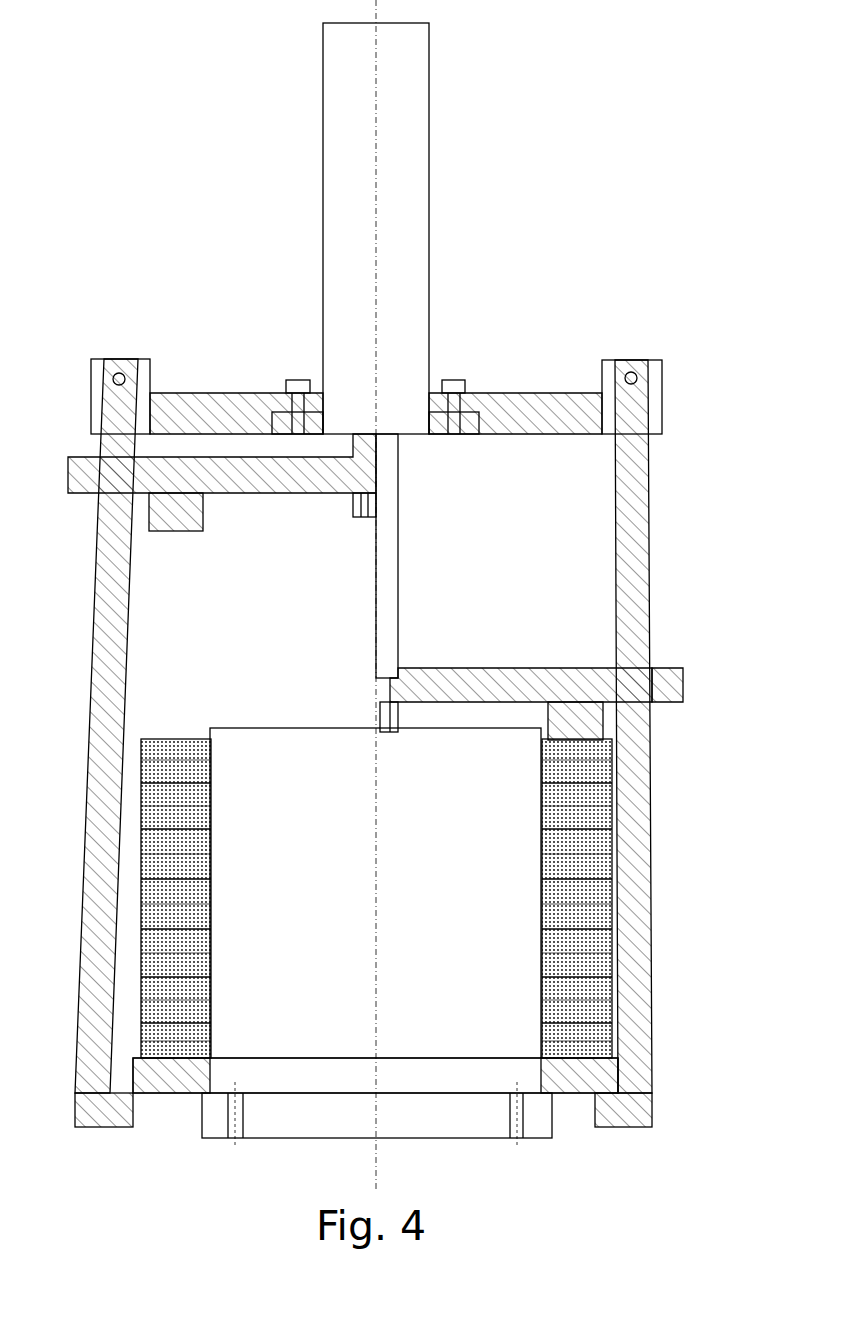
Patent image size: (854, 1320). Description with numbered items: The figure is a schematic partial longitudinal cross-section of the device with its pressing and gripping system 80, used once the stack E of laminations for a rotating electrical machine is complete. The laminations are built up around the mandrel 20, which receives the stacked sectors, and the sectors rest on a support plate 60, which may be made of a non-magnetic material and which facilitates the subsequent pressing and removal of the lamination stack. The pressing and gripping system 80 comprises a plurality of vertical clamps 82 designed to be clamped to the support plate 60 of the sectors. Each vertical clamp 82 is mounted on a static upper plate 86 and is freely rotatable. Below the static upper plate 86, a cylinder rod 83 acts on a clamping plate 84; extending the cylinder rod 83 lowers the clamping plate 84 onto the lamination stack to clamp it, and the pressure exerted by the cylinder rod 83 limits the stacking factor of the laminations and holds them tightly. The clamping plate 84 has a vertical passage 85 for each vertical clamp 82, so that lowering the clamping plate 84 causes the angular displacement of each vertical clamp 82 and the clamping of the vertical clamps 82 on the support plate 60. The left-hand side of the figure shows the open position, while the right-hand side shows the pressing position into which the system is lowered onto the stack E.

The mandrel 20 is at (328, 904).
The support plate 60 is at (173, 1075).
The pressing and gripping system 80 is at (508, 370).
The vertical clamp 82 is at (124, 628).
The cylinder rod 83 is at (390, 450).
The clamping plate 84 is at (545, 668).
The vertical passage 85 is at (110, 473).
The static upper plate 86 is at (200, 402).
The stack of laminations E is at (170, 737).